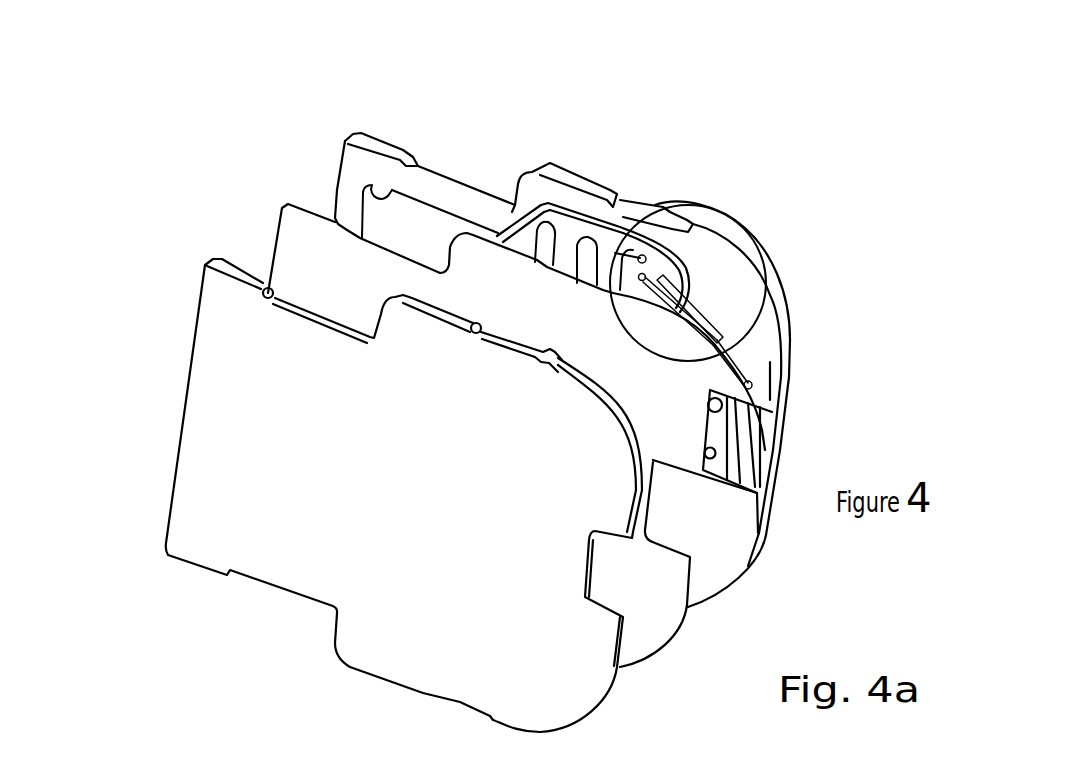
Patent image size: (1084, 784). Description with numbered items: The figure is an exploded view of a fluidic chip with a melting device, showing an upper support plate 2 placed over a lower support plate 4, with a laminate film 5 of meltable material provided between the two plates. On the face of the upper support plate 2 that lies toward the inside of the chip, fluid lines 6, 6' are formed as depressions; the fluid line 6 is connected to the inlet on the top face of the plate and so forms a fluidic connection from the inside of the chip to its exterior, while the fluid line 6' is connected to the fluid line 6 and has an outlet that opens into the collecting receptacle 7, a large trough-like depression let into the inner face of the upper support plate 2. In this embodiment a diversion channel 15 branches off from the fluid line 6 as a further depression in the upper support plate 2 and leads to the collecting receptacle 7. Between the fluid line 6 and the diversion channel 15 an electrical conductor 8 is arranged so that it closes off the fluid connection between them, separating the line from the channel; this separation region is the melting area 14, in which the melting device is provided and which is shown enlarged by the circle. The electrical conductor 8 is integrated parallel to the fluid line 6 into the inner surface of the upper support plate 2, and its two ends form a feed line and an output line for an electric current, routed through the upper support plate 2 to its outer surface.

The upper support plate 2 is at (353, 157).
The lower support plate 4 is at (203, 373).
The laminate film 5 is at (280, 253).
The fluid line 6 is at (806, 338).
The fluid line 6' is at (583, 147).
The collecting receptacle 7 is at (408, 210).
The electrical conductor 8 is at (703, 327).
The melting area 14 is at (769, 255).
The diversion channel 15 is at (615, 257).